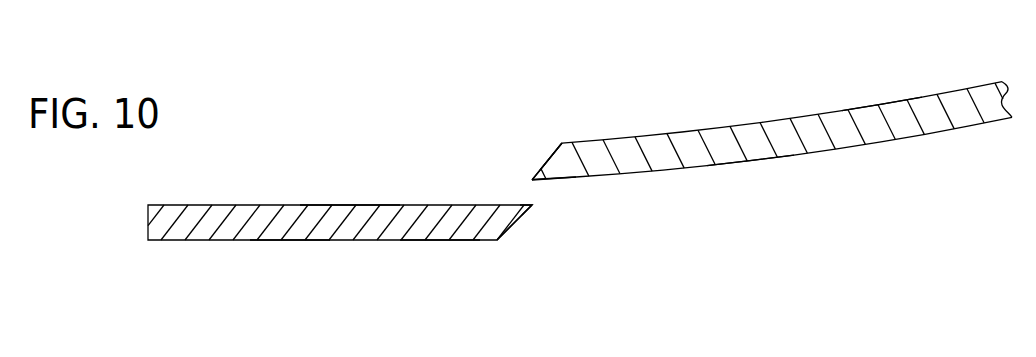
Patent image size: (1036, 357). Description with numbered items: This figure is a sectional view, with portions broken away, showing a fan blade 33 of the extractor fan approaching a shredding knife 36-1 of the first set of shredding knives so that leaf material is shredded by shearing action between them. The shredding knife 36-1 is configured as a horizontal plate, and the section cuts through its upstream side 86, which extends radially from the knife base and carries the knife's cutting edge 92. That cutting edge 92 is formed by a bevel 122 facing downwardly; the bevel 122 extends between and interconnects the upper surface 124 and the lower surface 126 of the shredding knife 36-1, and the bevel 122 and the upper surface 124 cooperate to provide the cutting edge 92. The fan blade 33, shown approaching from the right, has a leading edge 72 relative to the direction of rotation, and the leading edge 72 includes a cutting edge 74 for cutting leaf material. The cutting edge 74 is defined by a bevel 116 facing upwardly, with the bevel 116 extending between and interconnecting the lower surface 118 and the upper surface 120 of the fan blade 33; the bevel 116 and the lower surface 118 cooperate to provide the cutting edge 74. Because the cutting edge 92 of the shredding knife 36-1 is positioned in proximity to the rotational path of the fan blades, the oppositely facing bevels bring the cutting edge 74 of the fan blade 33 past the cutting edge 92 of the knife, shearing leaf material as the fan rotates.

The shredding knife 36-1 is at (240, 247).
The upper surface 124 is at (345, 204).
The lower surface 126 is at (287, 240).
The upstream side 86 is at (440, 240).
The bevel 122 is at (510, 232).
The cutting edge 92 is at (532, 205).
The fan blade 33 is at (940, 146).
The upper surface 120 is at (890, 101).
The lower surface 118 is at (768, 158).
The bevel 116 is at (549, 156).
The leading edge 72 is at (599, 200).
The cutting edge 74 is at (533, 183).